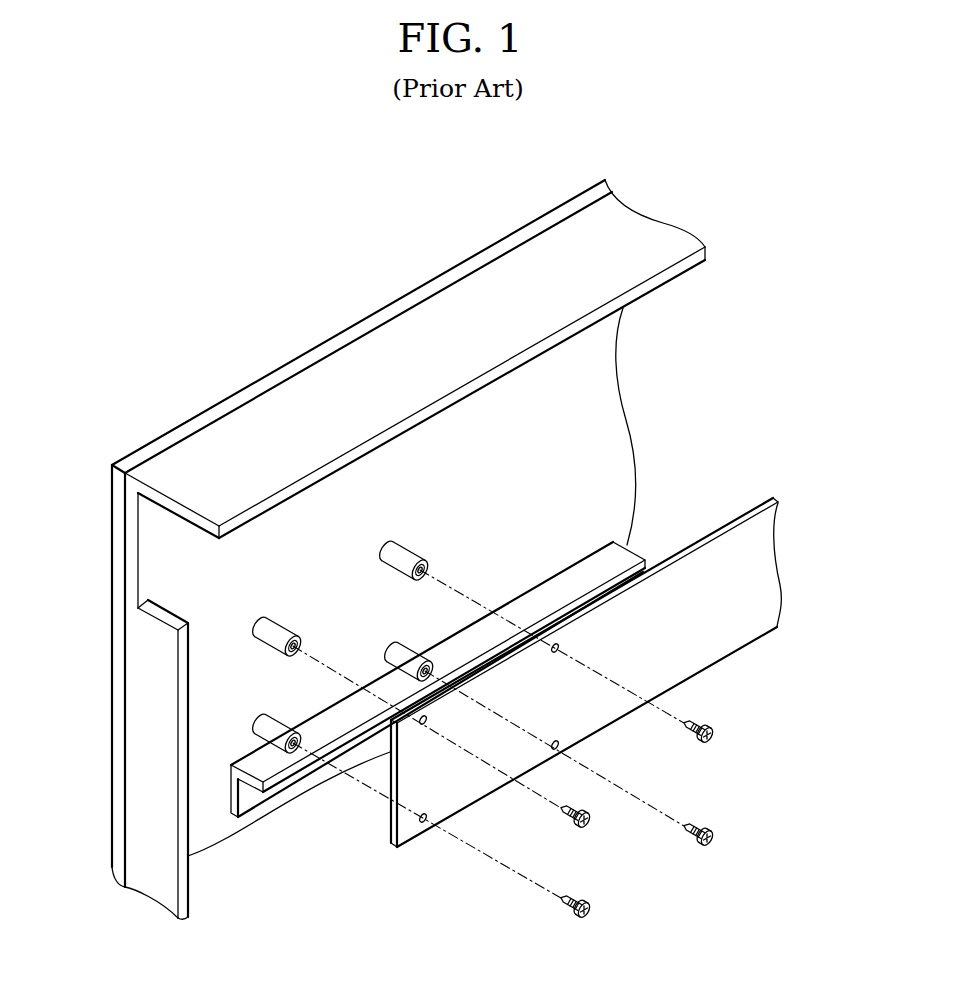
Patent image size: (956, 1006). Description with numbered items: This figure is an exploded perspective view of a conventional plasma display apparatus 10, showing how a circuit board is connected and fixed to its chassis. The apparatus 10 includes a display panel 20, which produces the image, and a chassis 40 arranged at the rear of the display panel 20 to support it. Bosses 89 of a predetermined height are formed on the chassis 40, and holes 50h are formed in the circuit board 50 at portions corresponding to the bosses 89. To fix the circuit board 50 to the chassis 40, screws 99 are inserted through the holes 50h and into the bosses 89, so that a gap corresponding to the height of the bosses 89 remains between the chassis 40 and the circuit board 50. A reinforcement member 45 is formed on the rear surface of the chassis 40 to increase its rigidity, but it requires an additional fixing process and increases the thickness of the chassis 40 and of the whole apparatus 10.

The plasma display apparatus 10 is at (285, 208).
The display panel 20 is at (443, 280).
The chassis 40 is at (329, 377).
The reinforcement member 45 is at (613, 563).
The circuit board 50 is at (724, 636).
The holes 50h is at (424, 824).
The bosses 89 is at (403, 556).
The screws 99 is at (568, 913).